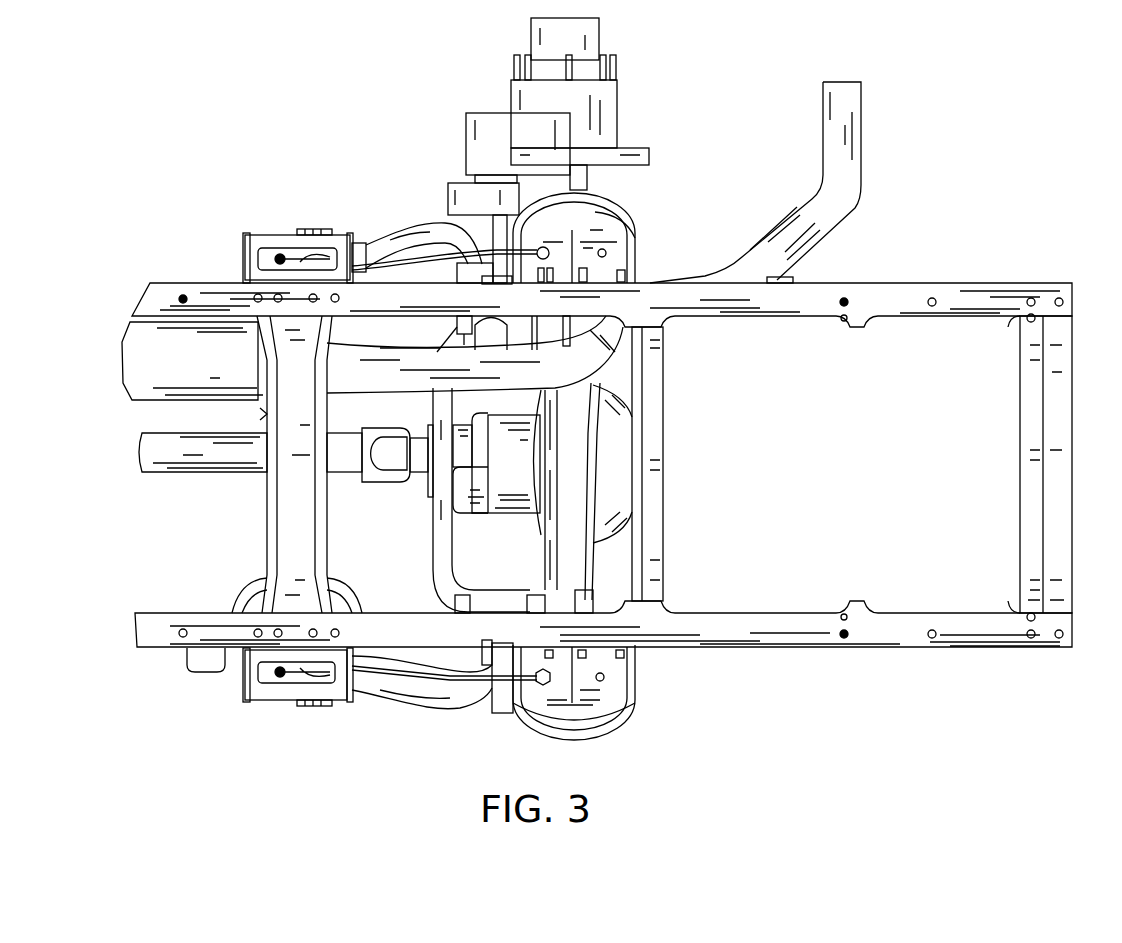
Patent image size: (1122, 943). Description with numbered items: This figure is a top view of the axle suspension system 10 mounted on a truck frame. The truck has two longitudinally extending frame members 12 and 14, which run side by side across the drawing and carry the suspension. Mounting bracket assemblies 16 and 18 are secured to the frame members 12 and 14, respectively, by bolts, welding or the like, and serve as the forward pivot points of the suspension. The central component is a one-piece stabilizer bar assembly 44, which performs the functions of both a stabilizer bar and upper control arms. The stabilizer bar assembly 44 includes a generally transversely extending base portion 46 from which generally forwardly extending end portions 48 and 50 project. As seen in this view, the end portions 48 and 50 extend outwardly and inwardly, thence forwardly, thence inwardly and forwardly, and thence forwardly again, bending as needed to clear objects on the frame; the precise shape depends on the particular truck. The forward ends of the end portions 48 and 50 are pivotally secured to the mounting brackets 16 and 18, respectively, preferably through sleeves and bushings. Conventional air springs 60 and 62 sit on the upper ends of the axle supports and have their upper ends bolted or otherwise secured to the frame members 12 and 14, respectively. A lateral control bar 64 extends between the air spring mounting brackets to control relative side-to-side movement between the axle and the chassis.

The axle suspension system 10 is at (680, 198).
The frame member 12 is at (775, 637).
The frame member 14 is at (874, 288).
The mounting bracket assembly 16 is at (243, 692).
The mounting bracket assembly 18 is at (243, 264).
The stabilizer bar assembly 44 is at (437, 529).
The base portion 46 is at (440, 549).
The forwardly extending end portion 48 is at (415, 710).
The forwardly extending end portion 50 is at (414, 217).
The air spring 60 is at (587, 737).
The air spring 62 is at (632, 232).
The lateral control bar 64 is at (553, 566).